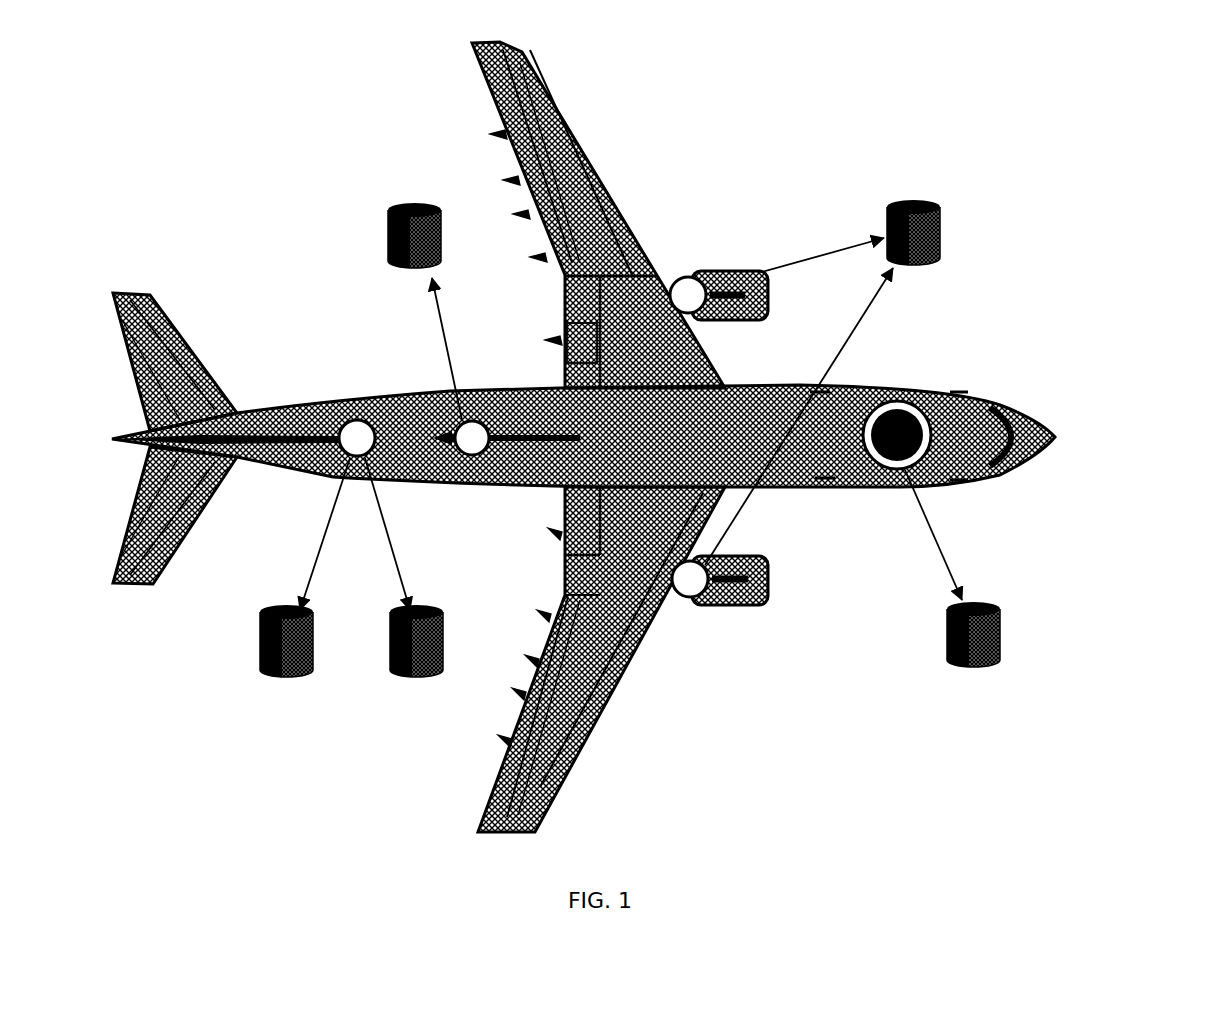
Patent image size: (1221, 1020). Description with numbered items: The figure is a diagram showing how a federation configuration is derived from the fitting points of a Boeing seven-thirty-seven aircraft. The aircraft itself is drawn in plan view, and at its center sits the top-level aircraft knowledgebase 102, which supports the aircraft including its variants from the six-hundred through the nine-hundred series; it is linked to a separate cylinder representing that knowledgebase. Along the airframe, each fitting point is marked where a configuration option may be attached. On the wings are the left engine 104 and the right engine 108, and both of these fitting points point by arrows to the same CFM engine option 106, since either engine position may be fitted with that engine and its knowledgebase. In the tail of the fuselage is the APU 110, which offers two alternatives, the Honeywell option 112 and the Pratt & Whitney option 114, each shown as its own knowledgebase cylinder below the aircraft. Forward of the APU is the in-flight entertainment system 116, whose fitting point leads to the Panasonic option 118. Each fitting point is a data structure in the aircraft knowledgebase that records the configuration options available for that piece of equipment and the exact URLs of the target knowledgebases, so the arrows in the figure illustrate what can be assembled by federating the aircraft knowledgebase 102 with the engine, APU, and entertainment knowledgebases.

The aircraft knowledgebase 102 is at (1010, 641).
The left engine 104 is at (733, 232).
The CFM56-7 option 106 is at (957, 212).
The right engine 108 is at (765, 600).
The APU 110 is at (357, 438).
The Honeywell 131 option 112 is at (392, 658).
The Pratt & Whitney option 114 is at (262, 655).
The in-flight entertainment system 116 is at (478, 455).
The Panasonic option 118 is at (388, 210).